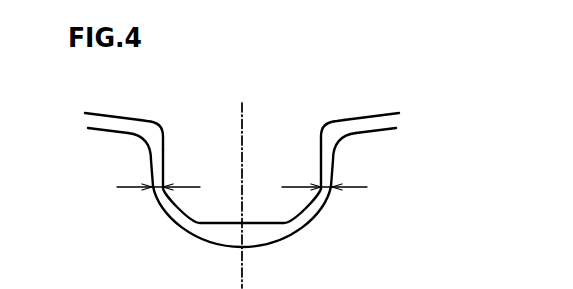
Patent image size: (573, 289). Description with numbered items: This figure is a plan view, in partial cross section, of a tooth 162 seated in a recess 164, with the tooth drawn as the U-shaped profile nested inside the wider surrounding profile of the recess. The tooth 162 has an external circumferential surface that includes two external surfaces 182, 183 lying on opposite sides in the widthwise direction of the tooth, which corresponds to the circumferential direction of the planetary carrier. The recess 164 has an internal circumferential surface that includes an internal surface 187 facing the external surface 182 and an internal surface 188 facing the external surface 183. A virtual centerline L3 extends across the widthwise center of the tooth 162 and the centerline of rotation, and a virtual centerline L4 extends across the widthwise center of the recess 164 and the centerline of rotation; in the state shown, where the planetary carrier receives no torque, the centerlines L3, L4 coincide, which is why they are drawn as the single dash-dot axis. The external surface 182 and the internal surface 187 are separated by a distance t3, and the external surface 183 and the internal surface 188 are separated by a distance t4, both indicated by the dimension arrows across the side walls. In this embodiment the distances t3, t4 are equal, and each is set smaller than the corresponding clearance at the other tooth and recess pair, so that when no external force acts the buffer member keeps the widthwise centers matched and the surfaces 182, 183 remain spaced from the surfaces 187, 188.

The external surface 182 is at (153, 142).
The external surface 183 is at (323, 142).
The internal surface 187 is at (153, 167).
The internal surface 188 is at (329, 163).
The tooth 162 is at (212, 215).
The recess 164 is at (264, 244).
The virtual centerline L3 is at (243, 142).
The virtual centerline L4 is at (243, 142).
The distance t3 is at (124, 190).
The distance t4 is at (355, 190).